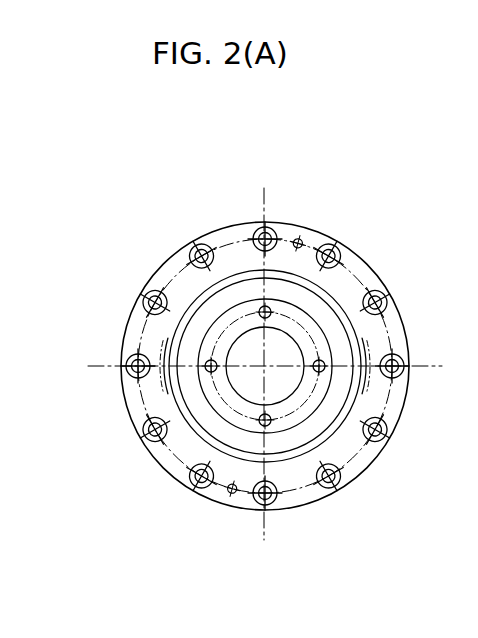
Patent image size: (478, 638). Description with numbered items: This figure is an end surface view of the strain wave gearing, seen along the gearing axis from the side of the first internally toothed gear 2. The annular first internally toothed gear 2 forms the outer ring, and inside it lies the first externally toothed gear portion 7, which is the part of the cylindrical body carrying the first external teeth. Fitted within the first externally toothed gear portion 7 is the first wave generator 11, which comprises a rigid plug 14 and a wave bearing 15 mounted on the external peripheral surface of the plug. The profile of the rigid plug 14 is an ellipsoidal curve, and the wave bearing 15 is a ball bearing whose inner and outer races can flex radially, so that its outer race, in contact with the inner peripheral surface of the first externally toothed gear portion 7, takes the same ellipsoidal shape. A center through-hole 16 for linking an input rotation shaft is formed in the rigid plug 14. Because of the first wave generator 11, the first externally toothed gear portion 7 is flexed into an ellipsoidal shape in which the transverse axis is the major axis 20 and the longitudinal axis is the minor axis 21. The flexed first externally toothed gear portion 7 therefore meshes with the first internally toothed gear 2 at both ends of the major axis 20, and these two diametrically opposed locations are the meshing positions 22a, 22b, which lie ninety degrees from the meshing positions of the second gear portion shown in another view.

The first internally toothed gear 2 is at (308, 242).
The first externally toothed gear portion 7 is at (334, 289).
The first wave generator 11 is at (322, 360).
The rigid plug 14 is at (320, 327).
The wave bearing 15 is at (333, 291).
The center through-hole 16 is at (304, 349).
The major axis 20 is at (93, 370).
The minor axis 21 is at (264, 202).
The meshing position 22a is at (161, 353).
The meshing position 22b is at (371, 380).